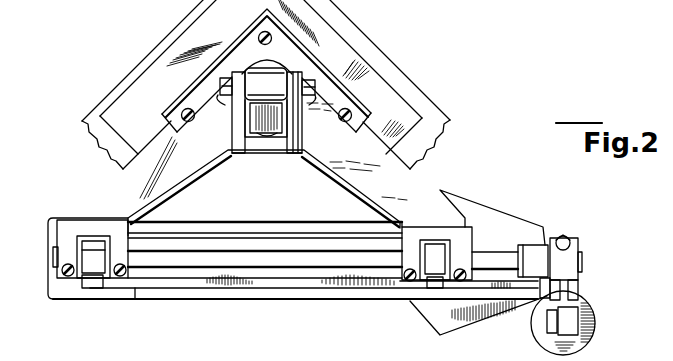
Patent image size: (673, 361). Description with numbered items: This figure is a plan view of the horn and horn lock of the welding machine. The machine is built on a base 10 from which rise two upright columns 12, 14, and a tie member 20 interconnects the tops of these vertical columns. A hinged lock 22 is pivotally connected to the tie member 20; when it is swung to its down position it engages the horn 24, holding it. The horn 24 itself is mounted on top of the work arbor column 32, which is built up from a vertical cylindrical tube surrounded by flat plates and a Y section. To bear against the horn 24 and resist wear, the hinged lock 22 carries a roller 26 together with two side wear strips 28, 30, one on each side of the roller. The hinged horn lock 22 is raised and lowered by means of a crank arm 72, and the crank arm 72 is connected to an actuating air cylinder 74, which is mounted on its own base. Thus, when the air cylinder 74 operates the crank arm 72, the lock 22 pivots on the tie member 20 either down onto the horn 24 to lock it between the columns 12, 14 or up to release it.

The base 10 is at (357, 36).
The upright column 12 is at (52, 283).
The upright column 14 is at (503, 222).
The tie member 20 is at (262, 301).
The hinged lock 22 is at (418, 174).
The horn 24 is at (260, 135).
The roller 26 is at (268, 72).
The side wear strip 28 is at (258, 116).
The side wear strip 30 is at (281, 116).
The work arbor column 32 is at (333, 63).
The crank arm 72 is at (573, 277).
The actuating air cylinder 74 is at (595, 320).